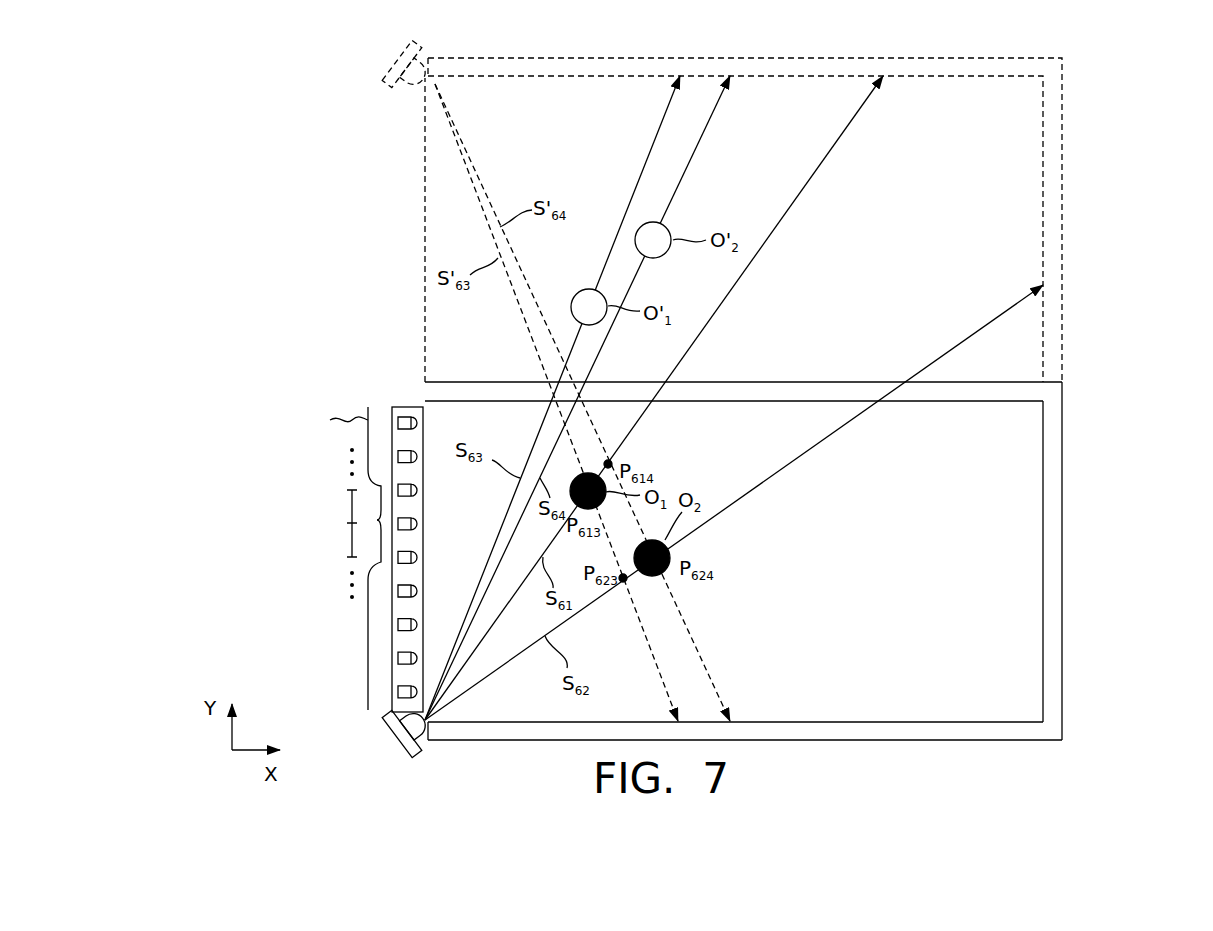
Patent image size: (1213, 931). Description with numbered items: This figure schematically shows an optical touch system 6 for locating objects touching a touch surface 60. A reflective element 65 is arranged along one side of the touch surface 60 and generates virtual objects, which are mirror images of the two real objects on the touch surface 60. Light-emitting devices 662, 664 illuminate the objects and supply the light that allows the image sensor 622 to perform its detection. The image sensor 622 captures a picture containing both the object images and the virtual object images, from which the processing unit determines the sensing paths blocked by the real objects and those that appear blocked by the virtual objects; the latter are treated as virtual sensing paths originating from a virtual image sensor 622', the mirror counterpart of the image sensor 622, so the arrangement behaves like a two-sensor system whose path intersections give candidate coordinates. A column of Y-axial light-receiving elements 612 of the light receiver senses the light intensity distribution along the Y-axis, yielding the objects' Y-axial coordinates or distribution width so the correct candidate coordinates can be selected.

The optical touch system 6 is at (294, 89).
The touch surface 60 is at (1000, 486).
The reflective element 65 is at (1025, 393).
The light-emitting device 662 is at (1055, 570).
The light-emitting device 664 is at (948, 732).
The Y-axial light-receiving elements 612 is at (410, 412).
The image sensor 622 is at (381, 727).
The virtual image sensor 622' is at (378, 69).